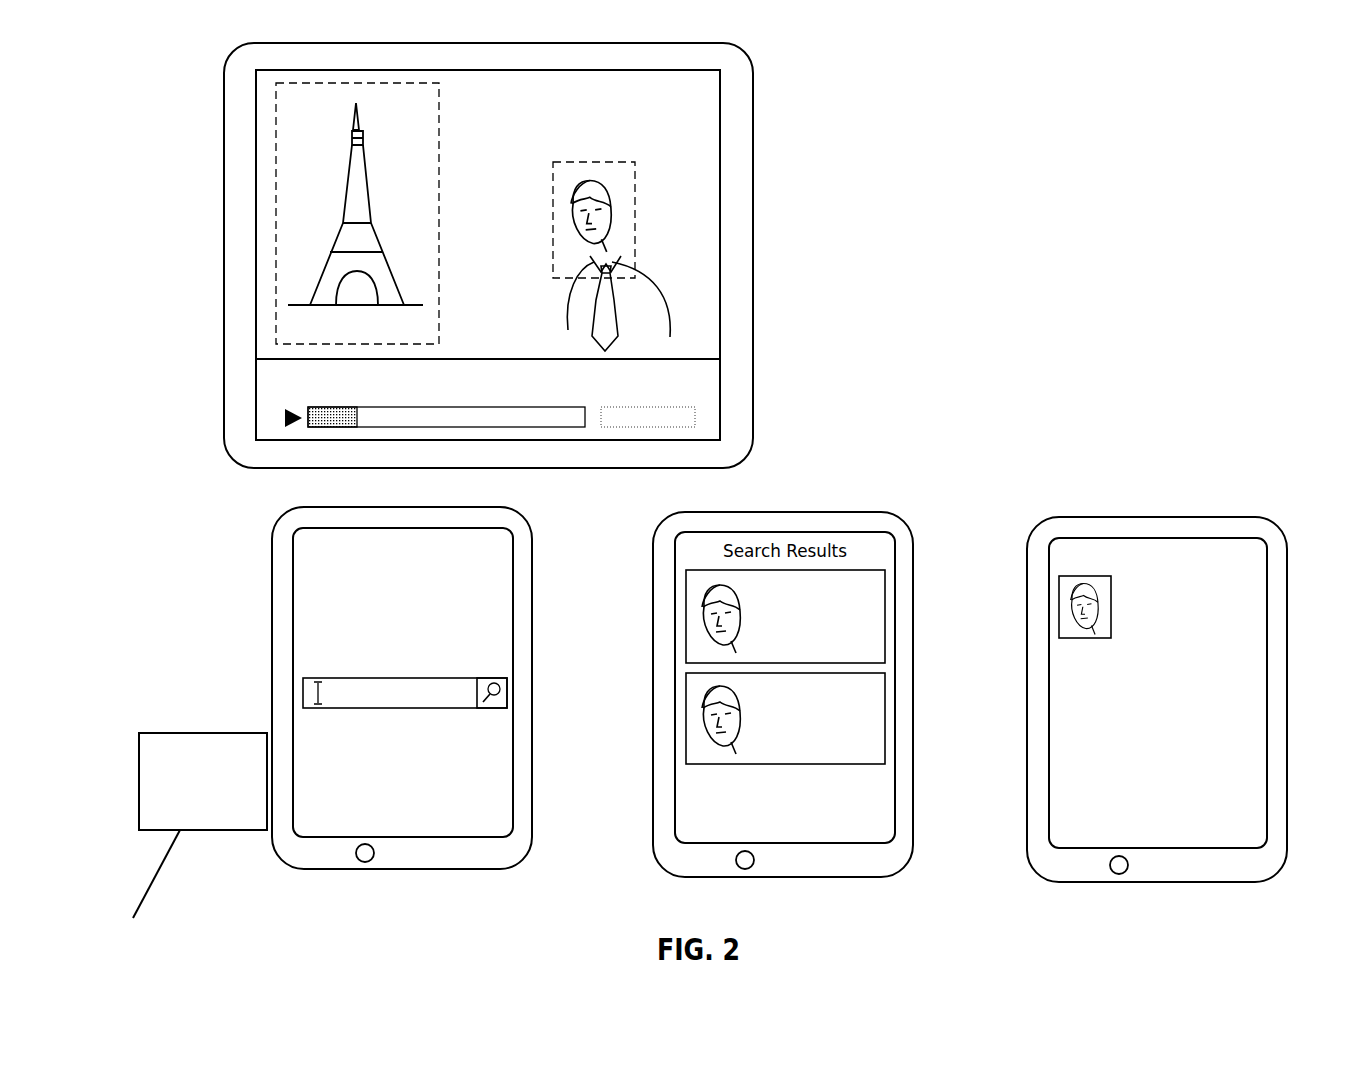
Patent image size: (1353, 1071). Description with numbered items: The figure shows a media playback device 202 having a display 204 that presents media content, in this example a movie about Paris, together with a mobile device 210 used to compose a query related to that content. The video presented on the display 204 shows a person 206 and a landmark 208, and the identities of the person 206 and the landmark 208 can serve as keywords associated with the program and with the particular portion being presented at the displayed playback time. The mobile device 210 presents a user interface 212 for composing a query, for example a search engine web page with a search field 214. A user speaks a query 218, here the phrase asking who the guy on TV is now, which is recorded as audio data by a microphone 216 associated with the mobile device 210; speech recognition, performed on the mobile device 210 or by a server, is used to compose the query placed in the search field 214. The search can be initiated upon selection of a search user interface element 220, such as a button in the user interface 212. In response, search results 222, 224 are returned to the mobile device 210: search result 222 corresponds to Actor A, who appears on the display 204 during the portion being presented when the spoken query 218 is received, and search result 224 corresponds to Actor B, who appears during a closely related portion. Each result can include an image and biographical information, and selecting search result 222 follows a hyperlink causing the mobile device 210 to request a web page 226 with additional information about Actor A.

The media playback device 202 is at (753, 95).
The display 204 is at (703, 118).
The person 206 is at (635, 167).
The landmark 208 is at (439, 213).
The mobile device 210 is at (272, 546).
The user interface 212 is at (490, 800).
The search field 214 is at (475, 676).
The microphone 216 is at (366, 874).
The spoken query 218 is at (139, 740).
The search user interface element 220 is at (509, 716).
The search result 222 is at (866, 620).
The search result 224 is at (875, 717).
The web page 226 is at (1240, 608).